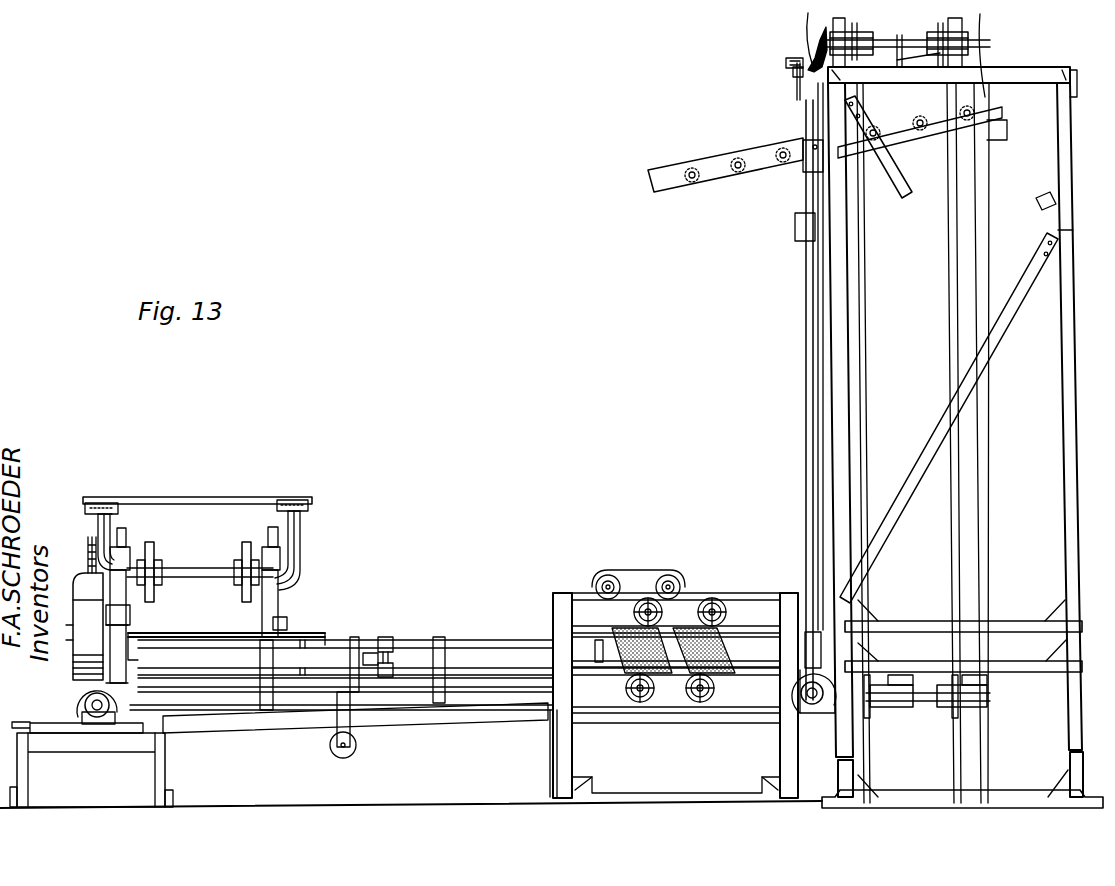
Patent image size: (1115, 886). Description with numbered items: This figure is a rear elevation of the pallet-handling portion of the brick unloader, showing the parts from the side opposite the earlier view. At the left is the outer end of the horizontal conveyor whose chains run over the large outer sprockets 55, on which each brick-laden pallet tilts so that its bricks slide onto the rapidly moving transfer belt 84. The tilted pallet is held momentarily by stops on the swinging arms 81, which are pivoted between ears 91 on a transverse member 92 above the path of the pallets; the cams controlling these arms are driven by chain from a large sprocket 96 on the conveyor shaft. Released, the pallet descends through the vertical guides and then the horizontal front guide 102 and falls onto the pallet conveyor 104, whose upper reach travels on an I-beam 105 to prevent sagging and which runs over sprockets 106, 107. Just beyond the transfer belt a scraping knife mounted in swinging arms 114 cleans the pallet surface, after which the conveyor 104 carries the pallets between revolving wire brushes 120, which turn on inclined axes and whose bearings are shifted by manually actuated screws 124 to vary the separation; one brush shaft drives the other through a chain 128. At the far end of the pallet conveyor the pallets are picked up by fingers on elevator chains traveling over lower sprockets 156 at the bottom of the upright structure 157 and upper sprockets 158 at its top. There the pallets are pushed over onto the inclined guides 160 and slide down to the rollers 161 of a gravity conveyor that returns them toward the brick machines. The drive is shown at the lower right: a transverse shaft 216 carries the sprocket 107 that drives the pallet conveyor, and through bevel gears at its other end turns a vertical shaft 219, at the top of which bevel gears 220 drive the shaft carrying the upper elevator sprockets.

The sprockets 55 is at (240, 556).
The swinging arms 81 is at (98, 532).
The transfer belt 84 is at (188, 633).
The ears 91 is at (88, 503).
The transverse member 92 is at (233, 497).
The large sprocket 96 is at (88, 560).
The horizontal front guide 102 is at (473, 667).
The pallet conveyor 104 is at (208, 682).
The I-beam 105 is at (345, 696).
The sprocket 106 is at (80, 705).
The sprocket 107 is at (817, 713).
The swinging arms 114 is at (368, 637).
The revolving wire brushes 120 is at (725, 640).
The manually actuated screws 124 is at (663, 735).
The chain 128 is at (640, 575).
The lower sprockets 156 is at (945, 718).
The upright structure 157 is at (846, 403).
The upper sprockets 158 is at (937, 28).
The inclined guides 160 is at (903, 62).
The rollers 161 is at (752, 170).
The transverse shaft 216 is at (795, 702).
The vertical shaft 219 is at (803, 499).
The bevel gears 220 is at (787, 62).